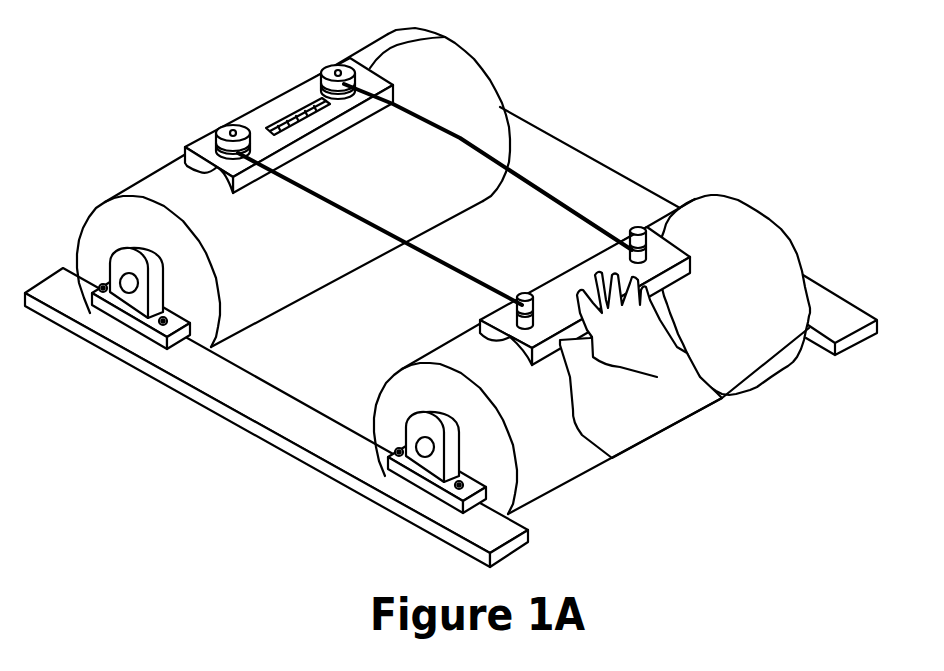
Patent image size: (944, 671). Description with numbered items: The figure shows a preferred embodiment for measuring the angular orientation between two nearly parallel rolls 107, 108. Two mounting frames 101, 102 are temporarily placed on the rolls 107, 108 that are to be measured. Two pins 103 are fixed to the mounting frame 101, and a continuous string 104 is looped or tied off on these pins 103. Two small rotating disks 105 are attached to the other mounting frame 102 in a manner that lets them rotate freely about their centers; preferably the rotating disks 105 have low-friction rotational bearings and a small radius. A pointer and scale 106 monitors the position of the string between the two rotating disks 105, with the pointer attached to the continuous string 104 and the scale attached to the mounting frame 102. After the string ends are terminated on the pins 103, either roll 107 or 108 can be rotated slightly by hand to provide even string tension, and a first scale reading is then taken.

The mounting frame 101 is at (747, 205).
The mounting frame 102 is at (447, 35).
The pins 103 is at (725, 398).
The continuous string 104 is at (570, 208).
The rotating disks 105 is at (336, 63).
The pointer and scale 106 is at (295, 112).
The roll 107 is at (562, 490).
The roll 108 is at (116, 180).